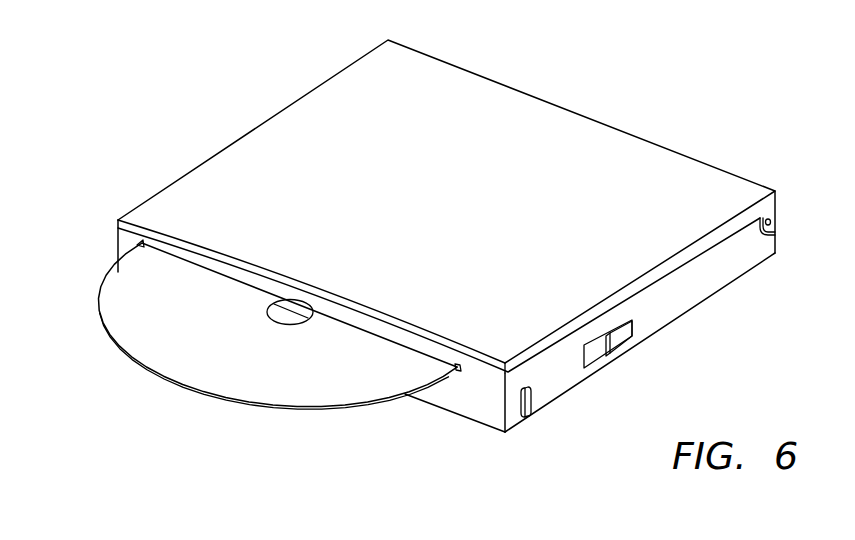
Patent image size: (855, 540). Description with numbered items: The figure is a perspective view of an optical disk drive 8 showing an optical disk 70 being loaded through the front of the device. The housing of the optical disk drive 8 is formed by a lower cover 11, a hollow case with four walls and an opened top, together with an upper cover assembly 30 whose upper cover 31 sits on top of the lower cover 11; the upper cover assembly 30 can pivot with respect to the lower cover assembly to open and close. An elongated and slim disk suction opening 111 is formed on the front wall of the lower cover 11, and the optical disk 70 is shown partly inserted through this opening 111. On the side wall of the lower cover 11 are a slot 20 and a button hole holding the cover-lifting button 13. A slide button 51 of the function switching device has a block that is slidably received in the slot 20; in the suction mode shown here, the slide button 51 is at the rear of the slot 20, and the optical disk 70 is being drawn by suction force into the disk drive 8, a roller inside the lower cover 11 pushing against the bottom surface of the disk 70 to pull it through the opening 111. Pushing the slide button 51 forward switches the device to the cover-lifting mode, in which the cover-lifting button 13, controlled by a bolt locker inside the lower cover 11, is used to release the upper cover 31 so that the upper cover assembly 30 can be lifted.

The optical disk drive 8 is at (739, 107).
The lower cover 11 is at (440, 402).
The cover-lifting button 13 is at (533, 410).
The slot 20 is at (593, 365).
The upper cover assembly 30 is at (399, 246).
The upper cover 31 is at (328, 90).
The slide button 51 is at (627, 336).
The optical disk 70 is at (123, 332).
The disk suction opening 111 is at (137, 246).